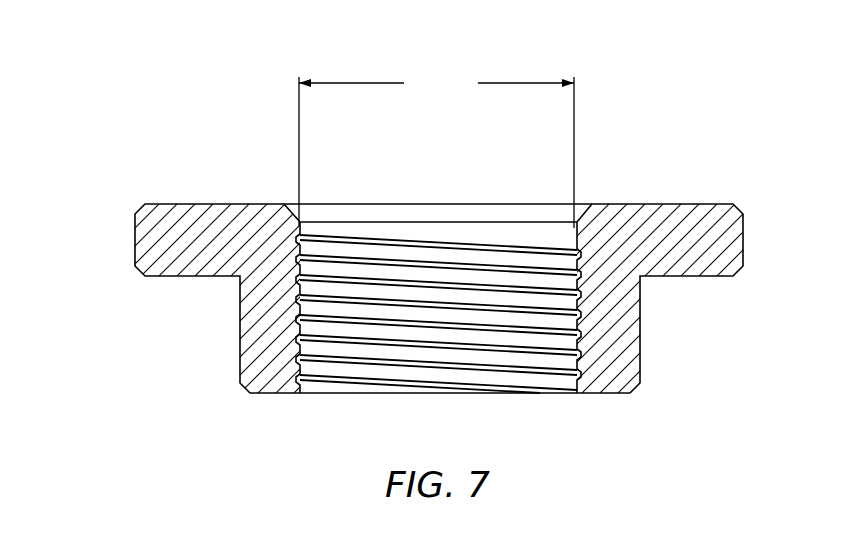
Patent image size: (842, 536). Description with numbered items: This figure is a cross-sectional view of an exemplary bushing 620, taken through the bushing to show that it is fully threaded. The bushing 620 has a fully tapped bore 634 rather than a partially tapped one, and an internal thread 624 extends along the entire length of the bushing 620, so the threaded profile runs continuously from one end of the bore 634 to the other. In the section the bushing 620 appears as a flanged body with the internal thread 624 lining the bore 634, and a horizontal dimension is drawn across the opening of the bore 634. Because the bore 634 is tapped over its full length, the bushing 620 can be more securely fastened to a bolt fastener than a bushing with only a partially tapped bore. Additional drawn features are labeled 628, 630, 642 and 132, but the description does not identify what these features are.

The bushing 620 is at (82, 186).
The internal thread 624 is at (287, 196).
The thread start / second chamfer 628 is at (569, 240).
The minimum diameter Dmin dimension 642 is at (444, 70).
The fully tapped bore 634 is at (378, 310).
The thread roots 630 is at (318, 335).
The thread crests 132 is at (572, 306).